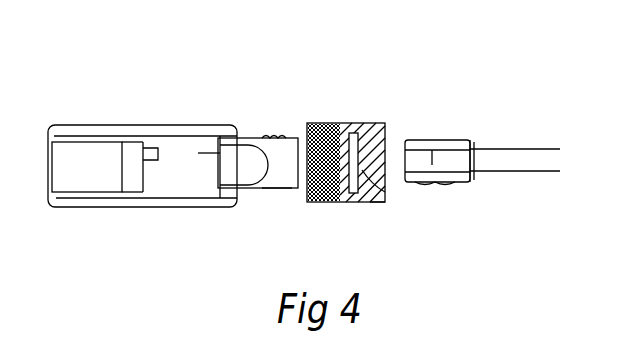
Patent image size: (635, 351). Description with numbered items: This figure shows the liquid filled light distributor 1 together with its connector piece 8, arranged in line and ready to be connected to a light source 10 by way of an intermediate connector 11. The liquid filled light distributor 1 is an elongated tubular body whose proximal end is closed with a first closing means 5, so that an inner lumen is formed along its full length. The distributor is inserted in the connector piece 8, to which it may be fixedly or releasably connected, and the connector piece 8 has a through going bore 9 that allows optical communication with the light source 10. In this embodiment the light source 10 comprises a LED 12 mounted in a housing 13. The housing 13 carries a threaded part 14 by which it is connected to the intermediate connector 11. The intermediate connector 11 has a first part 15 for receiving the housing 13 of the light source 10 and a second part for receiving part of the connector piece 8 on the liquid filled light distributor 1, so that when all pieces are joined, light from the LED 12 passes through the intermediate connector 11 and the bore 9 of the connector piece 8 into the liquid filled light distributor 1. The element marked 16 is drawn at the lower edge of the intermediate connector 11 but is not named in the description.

The shaft 1 is at (537, 156).
The clamp 5 is at (470, 143).
The seal 8 is at (457, 183).
The coupling block 9 is at (433, 146).
The tube 10 is at (232, 136).
The hatched block 11 is at (355, 130).
The piston 12 is at (240, 166).
The housing 13 is at (150, 125).
The tube end 14 is at (278, 190).
The dense filling 15 is at (310, 126).
The block edge 16 is at (385, 202).